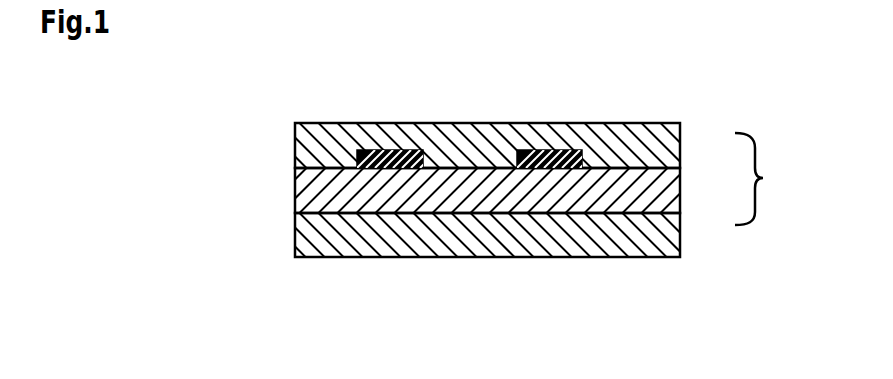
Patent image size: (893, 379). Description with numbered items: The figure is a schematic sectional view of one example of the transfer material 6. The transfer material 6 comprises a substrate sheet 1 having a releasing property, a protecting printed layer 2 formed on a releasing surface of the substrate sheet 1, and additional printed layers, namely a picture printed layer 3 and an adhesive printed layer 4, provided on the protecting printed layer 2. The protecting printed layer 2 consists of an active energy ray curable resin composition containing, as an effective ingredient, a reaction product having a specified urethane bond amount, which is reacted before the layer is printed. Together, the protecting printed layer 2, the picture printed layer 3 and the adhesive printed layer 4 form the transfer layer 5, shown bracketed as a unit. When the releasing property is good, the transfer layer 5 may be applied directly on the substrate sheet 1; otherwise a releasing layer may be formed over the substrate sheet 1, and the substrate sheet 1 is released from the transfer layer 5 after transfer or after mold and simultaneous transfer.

The substrate sheet 1 is at (298, 245).
The protecting printed layer 2 is at (310, 195).
The picture printed layer 3 is at (557, 157).
The adhesive printed layer 4 is at (312, 156).
The transfer layer 5 is at (763, 178).
The transfer material 6 is at (420, 95).